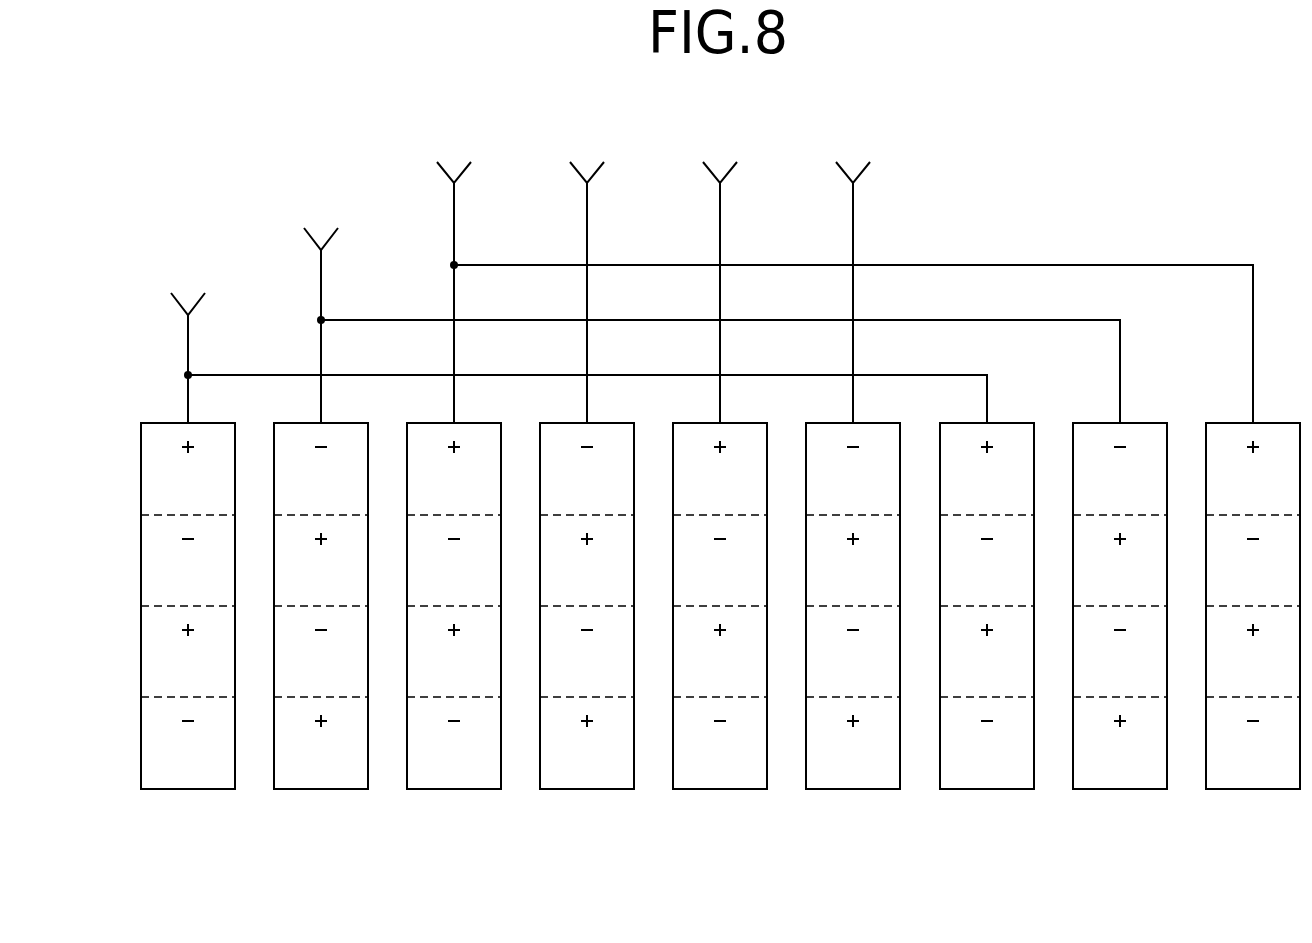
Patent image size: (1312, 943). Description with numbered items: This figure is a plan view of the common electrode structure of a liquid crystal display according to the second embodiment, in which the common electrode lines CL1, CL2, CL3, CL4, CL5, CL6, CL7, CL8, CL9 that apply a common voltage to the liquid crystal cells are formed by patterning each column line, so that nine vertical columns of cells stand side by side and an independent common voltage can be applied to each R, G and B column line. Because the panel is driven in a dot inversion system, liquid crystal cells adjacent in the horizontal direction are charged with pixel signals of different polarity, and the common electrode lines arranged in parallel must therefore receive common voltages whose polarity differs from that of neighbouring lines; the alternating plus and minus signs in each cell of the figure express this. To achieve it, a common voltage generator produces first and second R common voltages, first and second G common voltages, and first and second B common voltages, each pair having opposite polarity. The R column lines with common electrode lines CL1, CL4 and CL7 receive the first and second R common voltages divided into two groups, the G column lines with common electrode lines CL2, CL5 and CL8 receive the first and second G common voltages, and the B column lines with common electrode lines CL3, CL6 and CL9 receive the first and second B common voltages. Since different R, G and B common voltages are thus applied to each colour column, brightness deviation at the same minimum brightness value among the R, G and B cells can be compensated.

The common electrode line CL1 is at (188, 789).
The common electrode line CL2 is at (321, 789).
The common electrode line CL3 is at (454, 789).
The common electrode line CL4 is at (587, 789).
The common electrode line CL5 is at (720, 789).
The common electrode line CL6 is at (853, 789).
The common electrode line CL7 is at (987, 789).
The common electrode line CL8 is at (1120, 789).
The common electrode line CL9 is at (1253, 789).